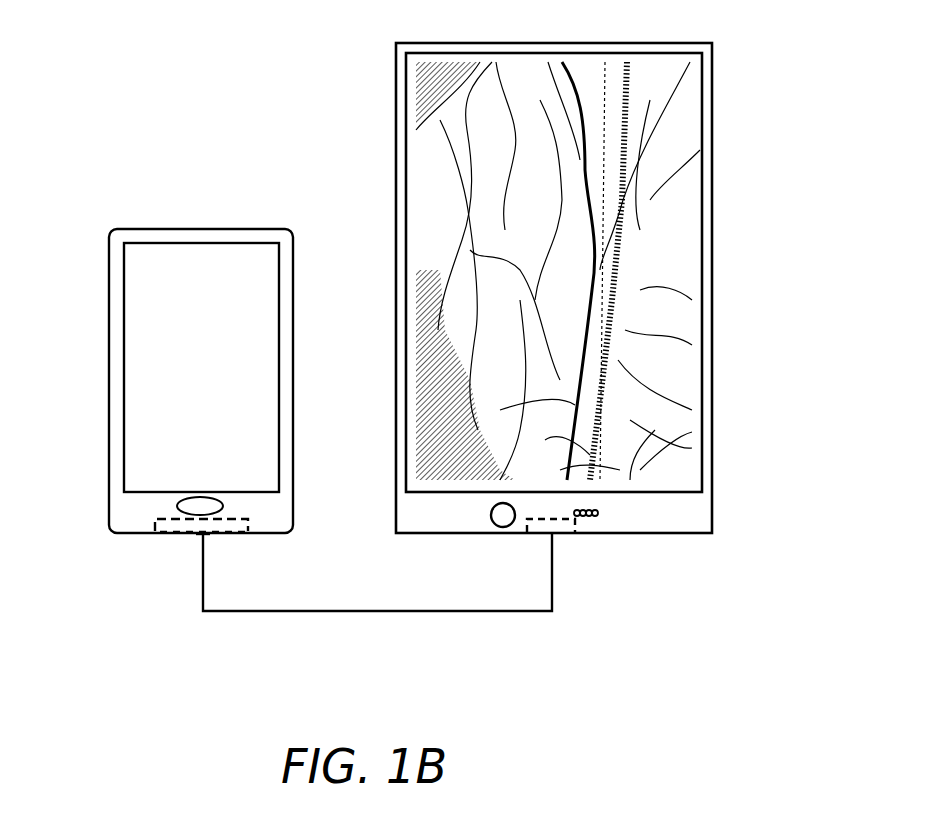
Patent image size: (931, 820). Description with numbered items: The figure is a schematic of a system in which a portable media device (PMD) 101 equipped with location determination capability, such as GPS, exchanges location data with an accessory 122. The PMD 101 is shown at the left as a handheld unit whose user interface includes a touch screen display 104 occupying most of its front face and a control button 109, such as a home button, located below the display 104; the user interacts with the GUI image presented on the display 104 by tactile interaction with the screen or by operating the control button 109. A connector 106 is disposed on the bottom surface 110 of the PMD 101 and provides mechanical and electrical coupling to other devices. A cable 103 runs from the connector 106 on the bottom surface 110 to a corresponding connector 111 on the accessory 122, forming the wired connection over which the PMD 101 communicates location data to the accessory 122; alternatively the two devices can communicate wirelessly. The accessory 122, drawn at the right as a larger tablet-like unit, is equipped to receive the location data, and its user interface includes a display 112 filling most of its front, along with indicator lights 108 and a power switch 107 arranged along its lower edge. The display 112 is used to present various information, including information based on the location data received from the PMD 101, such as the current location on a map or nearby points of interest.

The portable media device 101 is at (202, 228).
The cable 103 is at (338, 611).
The touch screen display 104 is at (123, 365).
The connector 106 is at (155, 524).
The power switch 107 is at (498, 527).
The indicator lights 108 is at (588, 515).
The control buttons 109 is at (224, 507).
The bottom surface 110 is at (222, 535).
The connector 111 is at (551, 520).
The display 112 is at (692, 495).
The accessory 122 is at (713, 90).